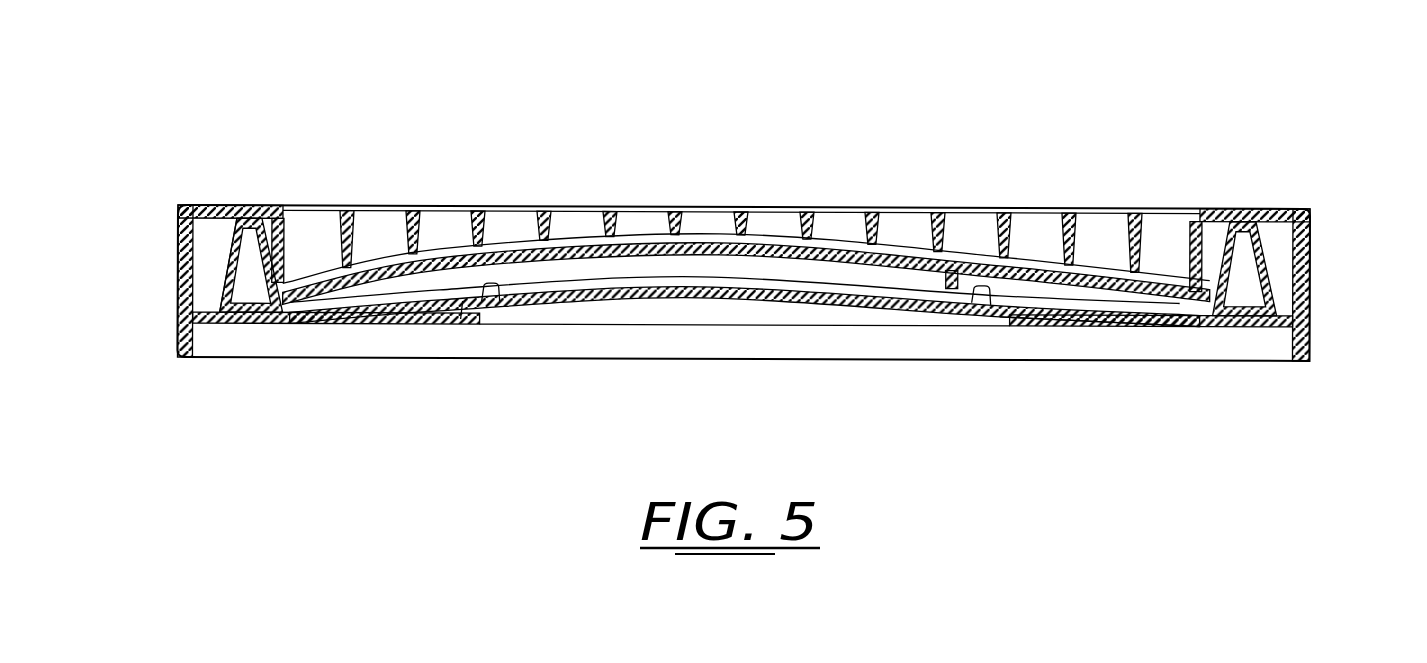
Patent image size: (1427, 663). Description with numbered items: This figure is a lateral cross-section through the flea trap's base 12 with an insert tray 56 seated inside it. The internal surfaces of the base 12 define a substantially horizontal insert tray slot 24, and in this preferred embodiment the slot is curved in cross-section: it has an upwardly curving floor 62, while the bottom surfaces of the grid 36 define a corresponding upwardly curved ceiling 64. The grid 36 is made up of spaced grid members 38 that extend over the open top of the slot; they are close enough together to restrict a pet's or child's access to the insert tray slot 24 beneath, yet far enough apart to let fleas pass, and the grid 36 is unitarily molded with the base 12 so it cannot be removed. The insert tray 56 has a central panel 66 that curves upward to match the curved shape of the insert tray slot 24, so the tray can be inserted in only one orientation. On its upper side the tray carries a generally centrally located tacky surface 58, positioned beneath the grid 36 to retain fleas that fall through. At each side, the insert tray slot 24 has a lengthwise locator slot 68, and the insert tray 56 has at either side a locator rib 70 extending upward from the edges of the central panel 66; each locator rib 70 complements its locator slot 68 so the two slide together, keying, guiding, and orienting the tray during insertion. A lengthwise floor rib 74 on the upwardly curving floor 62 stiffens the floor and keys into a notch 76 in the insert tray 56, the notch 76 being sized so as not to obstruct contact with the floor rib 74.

The base 12 is at (183, 322).
The insert tray slot 24 is at (458, 300).
The grid 36 is at (347, 207).
The grid members 38 is at (673, 207).
The insert tray 56 is at (252, 312).
The tacky surface 58 is at (1093, 275).
The upwardly curving floor 62 is at (843, 288).
The upwardly curved ceiling 64 is at (497, 207).
The central panel 66 is at (713, 237).
The locator slot 68 is at (207, 205).
The locator rib 70 is at (222, 253).
The floor rib 74 is at (1040, 318).
The notch 76 is at (948, 275).